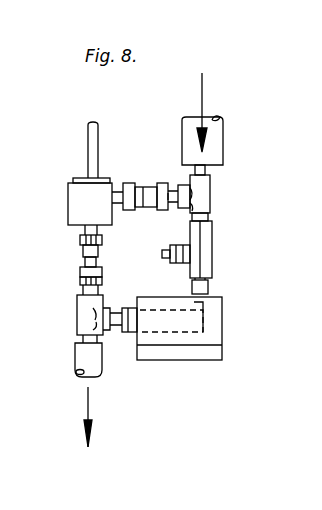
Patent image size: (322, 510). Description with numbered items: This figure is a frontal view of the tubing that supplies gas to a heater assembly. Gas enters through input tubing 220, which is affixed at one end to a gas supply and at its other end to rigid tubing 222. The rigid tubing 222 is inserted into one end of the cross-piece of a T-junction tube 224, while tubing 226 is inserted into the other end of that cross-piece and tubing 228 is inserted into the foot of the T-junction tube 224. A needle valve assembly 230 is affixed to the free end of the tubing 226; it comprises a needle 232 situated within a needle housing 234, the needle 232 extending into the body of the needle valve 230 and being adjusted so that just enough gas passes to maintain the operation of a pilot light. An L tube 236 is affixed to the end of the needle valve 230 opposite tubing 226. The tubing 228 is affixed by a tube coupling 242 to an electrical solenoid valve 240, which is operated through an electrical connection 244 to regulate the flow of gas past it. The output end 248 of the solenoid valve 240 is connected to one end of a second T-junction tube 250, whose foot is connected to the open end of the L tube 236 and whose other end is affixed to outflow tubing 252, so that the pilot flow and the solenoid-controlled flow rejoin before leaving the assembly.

The input tubing 220 is at (224, 133).
The rigid tubing 222 is at (210, 168).
The T-junction tube 224 is at (208, 192).
The tubing 226 is at (208, 216).
The needle valve assembly 230 is at (208, 239).
The needle 232 is at (171, 253).
The needle housing 234 is at (176, 263).
The L tube 236 is at (215, 327).
The electrical solenoid valve 240 is at (82, 197).
The tube coupling 242 is at (133, 185).
The electrical connection 244 is at (92, 142).
The output end 248 is at (86, 229).
The T-junction tube 250 is at (79, 305).
The outflow tubing 252 is at (78, 360).
The tubing 228 is at (170, 185).